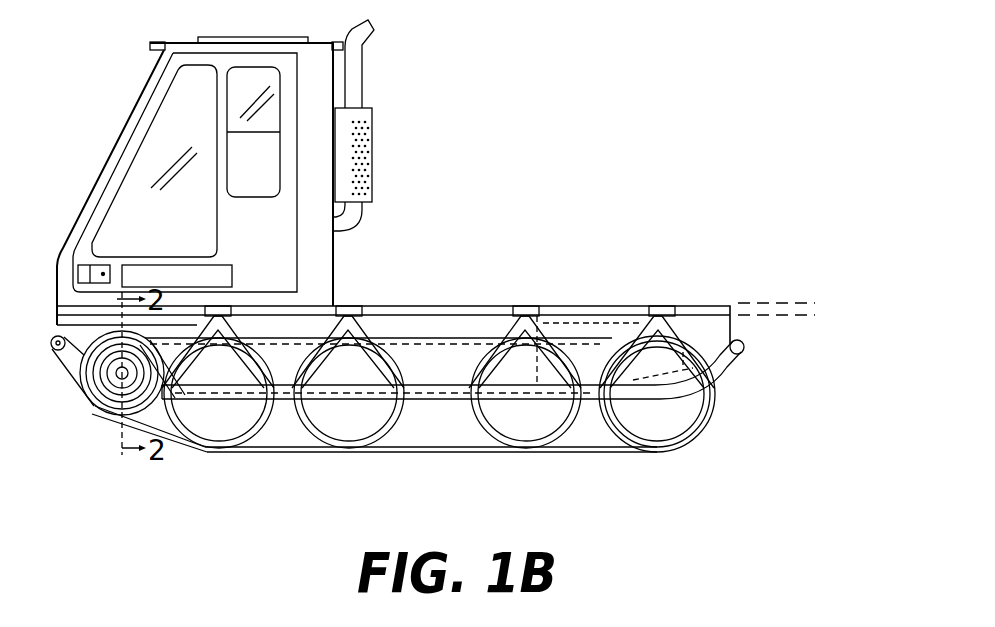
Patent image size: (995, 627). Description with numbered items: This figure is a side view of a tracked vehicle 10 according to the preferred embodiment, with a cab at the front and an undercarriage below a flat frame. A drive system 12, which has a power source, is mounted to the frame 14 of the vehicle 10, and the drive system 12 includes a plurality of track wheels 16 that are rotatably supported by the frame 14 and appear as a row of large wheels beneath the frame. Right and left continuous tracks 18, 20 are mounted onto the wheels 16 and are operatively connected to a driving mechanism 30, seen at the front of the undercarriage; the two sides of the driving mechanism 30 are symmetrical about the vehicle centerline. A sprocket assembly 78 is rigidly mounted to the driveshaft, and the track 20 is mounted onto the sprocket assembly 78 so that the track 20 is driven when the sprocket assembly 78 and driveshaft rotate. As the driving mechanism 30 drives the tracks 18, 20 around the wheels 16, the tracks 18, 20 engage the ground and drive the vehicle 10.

The tracked vehicle 10 is at (438, 101).
The drive system 12 is at (556, 472).
The frame 14 is at (418, 306).
The track wheels 16 is at (301, 438).
The right continuous track 18 is at (374, 423).
The left continuous track 20 is at (433, 452).
The driving mechanism 30 is at (85, 406).
The sprocket assembly 78 is at (178, 413).